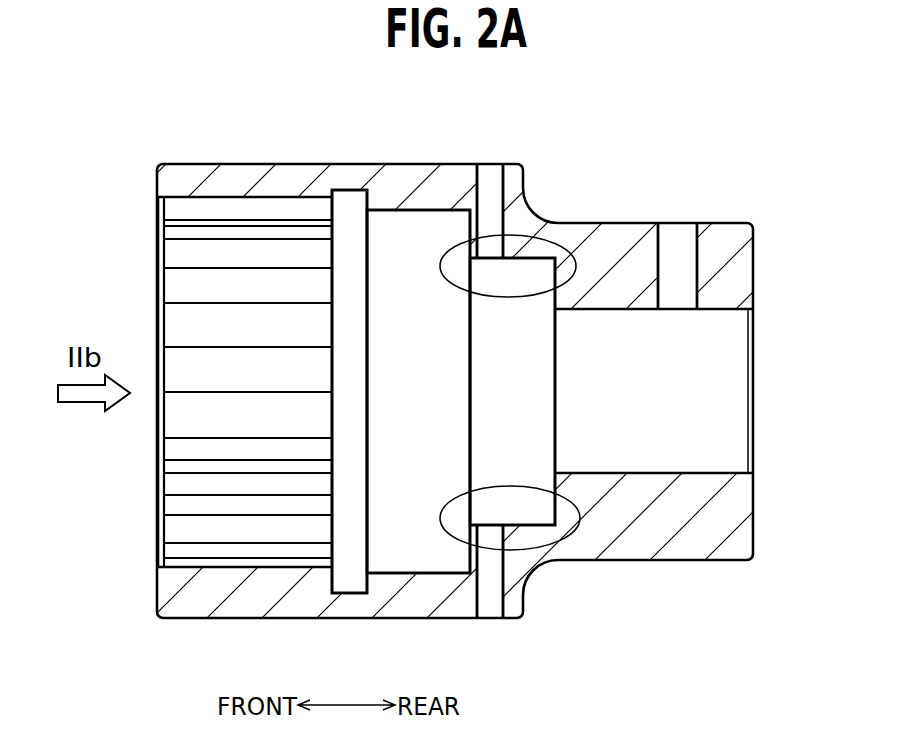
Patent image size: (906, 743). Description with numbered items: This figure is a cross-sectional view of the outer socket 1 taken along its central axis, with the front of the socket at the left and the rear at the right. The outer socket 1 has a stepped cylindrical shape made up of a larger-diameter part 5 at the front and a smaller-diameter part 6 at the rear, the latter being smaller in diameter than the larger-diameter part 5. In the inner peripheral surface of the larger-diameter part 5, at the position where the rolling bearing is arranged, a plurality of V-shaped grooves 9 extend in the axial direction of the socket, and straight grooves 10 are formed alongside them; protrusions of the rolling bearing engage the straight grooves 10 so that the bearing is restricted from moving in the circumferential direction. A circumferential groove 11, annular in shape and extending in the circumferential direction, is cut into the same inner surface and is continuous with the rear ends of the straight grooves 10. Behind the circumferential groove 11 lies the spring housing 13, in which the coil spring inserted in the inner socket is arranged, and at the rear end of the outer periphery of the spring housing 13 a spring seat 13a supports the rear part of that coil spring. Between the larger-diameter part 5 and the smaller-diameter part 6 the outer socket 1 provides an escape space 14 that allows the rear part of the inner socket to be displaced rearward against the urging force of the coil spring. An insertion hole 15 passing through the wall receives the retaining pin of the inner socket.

The outer socket 1 is at (385, 126).
The larger-diameter part 5 is at (238, 618).
The smaller-diameter part 6 is at (673, 562).
The V-shaped grooves 9 is at (237, 257).
The straight grooves 10 is at (283, 207).
The circumferential groove 11 is at (350, 565).
The spring housing 13 is at (428, 228).
The spring seat 13a is at (555, 292).
The escape space 14 is at (525, 362).
The insertion hole 15 is at (490, 187).